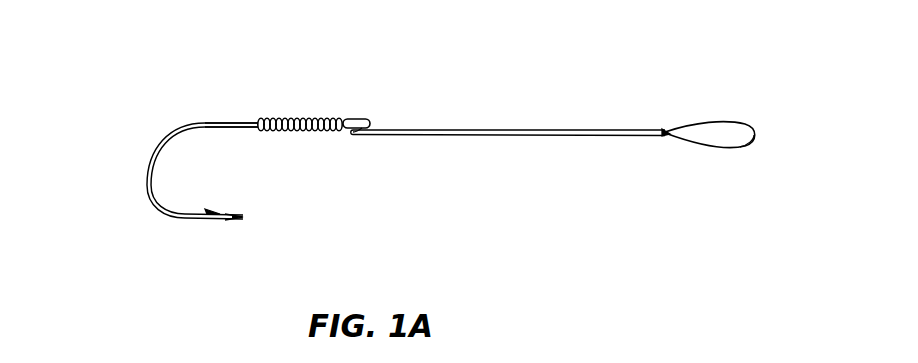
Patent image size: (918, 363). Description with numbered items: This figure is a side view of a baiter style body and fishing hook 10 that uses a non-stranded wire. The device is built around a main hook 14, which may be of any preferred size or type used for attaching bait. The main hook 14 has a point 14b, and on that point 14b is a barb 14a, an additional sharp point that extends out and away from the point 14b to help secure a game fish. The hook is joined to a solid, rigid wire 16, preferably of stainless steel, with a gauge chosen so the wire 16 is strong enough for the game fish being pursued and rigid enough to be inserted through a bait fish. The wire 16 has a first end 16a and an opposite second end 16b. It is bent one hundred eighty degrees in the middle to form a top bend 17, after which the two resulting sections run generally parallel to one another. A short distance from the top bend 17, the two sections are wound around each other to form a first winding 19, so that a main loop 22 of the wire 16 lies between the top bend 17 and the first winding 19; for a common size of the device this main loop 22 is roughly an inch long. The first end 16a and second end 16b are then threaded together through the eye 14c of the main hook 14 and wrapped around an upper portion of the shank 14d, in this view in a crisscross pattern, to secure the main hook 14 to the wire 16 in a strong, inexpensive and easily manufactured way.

The baiter style body and fishing hook 10 is at (606, 65).
The main hook 14 is at (131, 66).
The barb 14a is at (203, 210).
The point 14b is at (241, 219).
The eye 14c is at (365, 118).
The shank 14d is at (247, 123).
The wire 16 is at (475, 129).
The first end 16a is at (260, 117).
The second end 16b is at (264, 131).
The top bend 17 is at (745, 123).
The first winding 19 is at (667, 136).
The main loop 22 is at (745, 148).